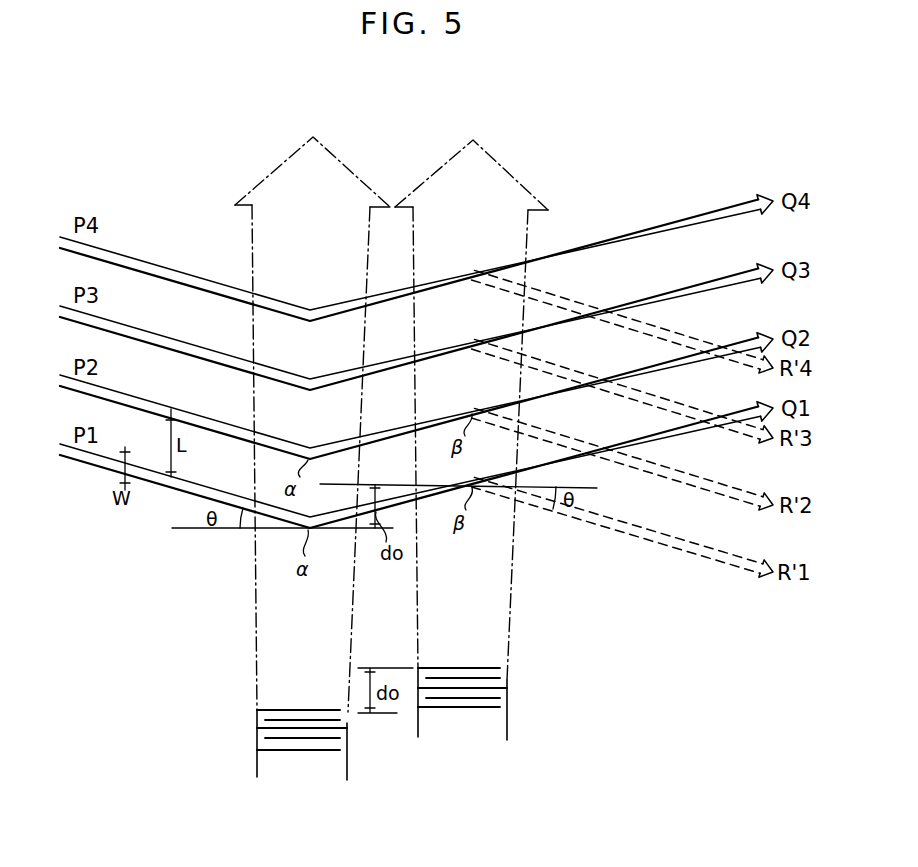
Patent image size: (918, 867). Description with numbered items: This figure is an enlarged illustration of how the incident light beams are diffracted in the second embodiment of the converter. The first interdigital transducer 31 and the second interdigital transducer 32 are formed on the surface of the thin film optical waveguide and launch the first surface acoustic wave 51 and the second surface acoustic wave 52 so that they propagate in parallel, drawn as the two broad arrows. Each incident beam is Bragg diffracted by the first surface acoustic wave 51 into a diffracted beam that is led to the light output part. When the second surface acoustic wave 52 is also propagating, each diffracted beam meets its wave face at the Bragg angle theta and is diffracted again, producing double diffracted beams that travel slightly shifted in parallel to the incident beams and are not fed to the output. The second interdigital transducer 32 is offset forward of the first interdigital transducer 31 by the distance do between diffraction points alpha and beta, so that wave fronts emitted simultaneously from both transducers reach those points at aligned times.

The first interdigital transducer 31 is at (303, 751).
The second interdigital transducer 32 is at (467, 710).
The first surface acoustic wave 51 is at (342, 162).
The second surface acoustic wave 52 is at (512, 173).